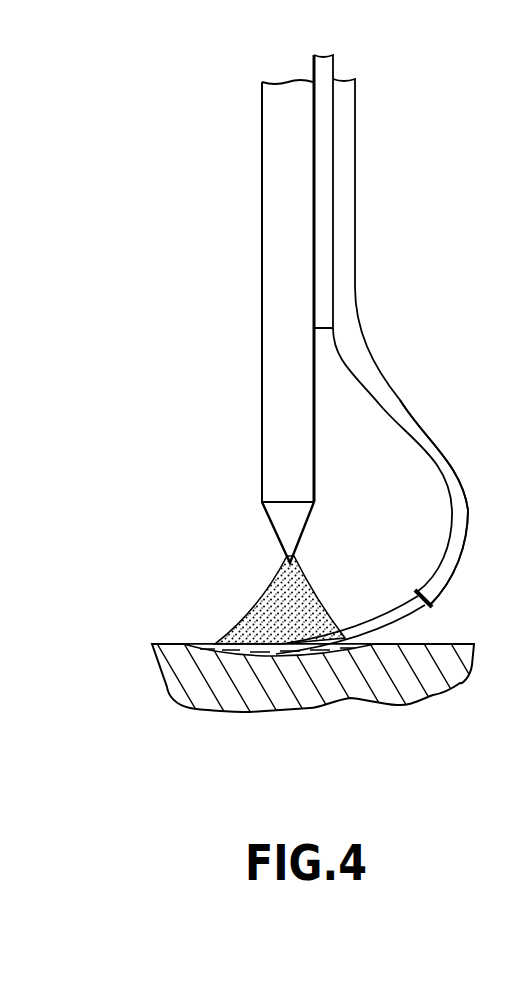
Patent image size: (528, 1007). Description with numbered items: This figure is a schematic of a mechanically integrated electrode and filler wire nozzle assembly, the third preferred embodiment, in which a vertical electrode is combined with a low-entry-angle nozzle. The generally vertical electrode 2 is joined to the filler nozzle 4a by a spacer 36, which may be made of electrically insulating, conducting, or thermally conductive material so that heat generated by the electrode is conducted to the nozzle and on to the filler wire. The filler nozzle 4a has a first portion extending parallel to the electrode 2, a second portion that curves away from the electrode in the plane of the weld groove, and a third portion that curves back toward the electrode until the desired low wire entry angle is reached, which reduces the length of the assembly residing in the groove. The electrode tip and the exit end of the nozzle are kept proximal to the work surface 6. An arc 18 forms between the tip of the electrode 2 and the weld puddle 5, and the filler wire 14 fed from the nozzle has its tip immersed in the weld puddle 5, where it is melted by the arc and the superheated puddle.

The electrode 2 is at (262, 290).
The spacer 36 is at (325, 153).
The filler nozzle 4a is at (473, 512).
The arc 18 is at (250, 607).
The filler wire 14 is at (387, 620).
The work surface 6 is at (437, 638).
The weld puddle 5 is at (225, 652).